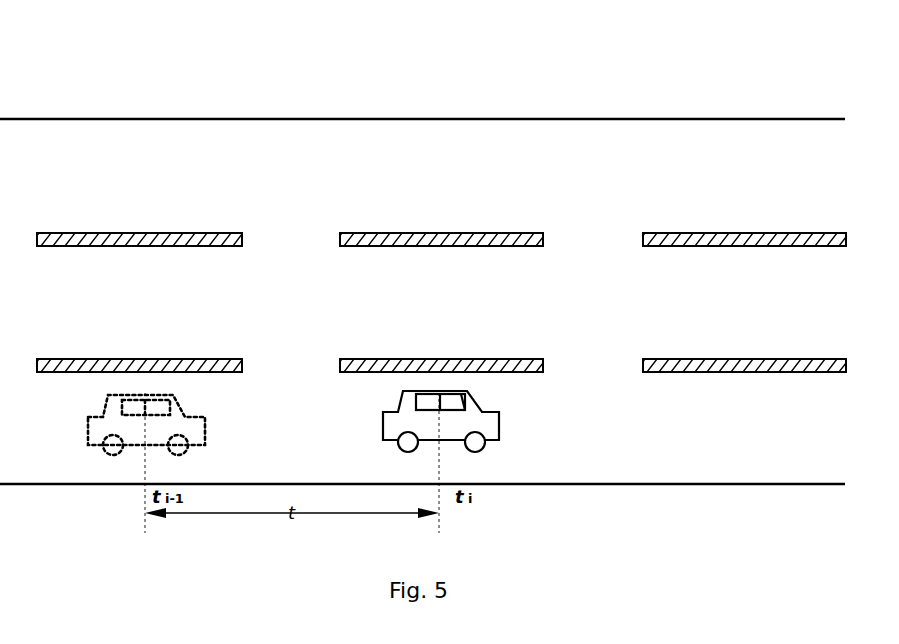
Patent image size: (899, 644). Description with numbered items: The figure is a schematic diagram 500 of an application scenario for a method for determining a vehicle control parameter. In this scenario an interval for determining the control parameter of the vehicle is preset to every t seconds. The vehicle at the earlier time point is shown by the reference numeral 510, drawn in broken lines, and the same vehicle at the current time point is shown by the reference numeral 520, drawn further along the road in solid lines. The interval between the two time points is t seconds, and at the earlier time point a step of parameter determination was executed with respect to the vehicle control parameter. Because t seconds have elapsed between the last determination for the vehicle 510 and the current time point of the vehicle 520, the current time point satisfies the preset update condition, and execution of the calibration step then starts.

The schematic diagram 500 is at (697, 44).
The vehicle at time point t(i-1) 510 is at (203, 413).
The vehicle at current time point t(i) 520 is at (498, 410).